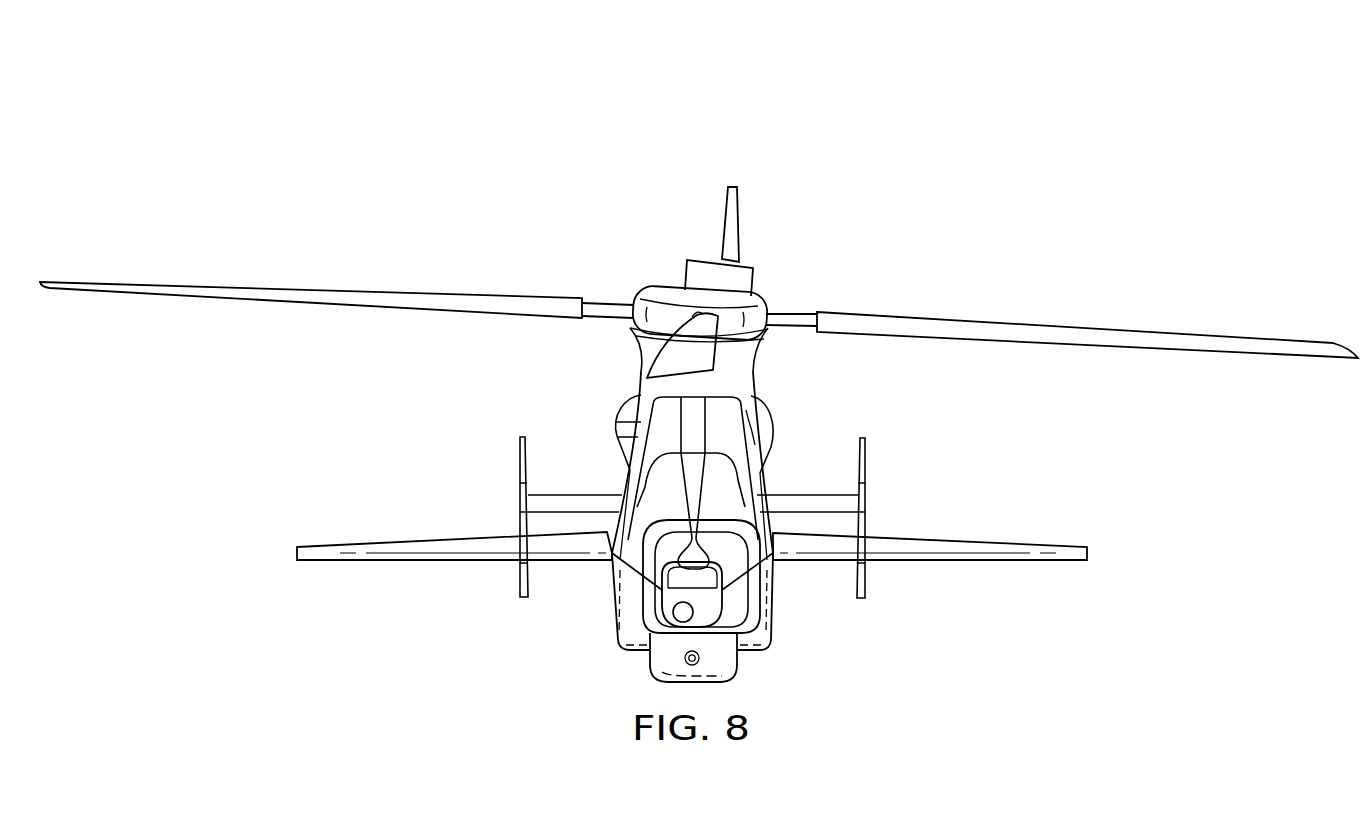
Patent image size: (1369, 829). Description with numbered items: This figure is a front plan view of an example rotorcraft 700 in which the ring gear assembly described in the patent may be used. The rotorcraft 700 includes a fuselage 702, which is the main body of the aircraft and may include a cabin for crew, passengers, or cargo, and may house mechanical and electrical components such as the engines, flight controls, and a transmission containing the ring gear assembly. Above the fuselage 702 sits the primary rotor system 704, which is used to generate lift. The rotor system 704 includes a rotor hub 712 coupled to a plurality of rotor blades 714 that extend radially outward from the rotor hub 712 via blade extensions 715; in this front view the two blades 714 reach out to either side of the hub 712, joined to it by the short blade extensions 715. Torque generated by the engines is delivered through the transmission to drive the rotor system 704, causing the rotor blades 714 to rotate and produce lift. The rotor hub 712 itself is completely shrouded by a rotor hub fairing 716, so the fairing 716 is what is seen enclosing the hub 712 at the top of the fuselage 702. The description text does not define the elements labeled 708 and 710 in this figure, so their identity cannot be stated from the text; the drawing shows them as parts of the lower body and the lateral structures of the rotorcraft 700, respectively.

The rotorcraft 700 is at (320, 140).
The fuselage 702 is at (624, 414).
The primary rotor system 704 is at (774, 204).
The fuselage 708 is at (596, 613).
The wing 710 is at (404, 538).
The rotor hub 712 is at (777, 294).
The rotor blades 714 is at (330, 291).
The blade extensions 715 is at (600, 303).
The rotor hub fairing 716 is at (662, 288).